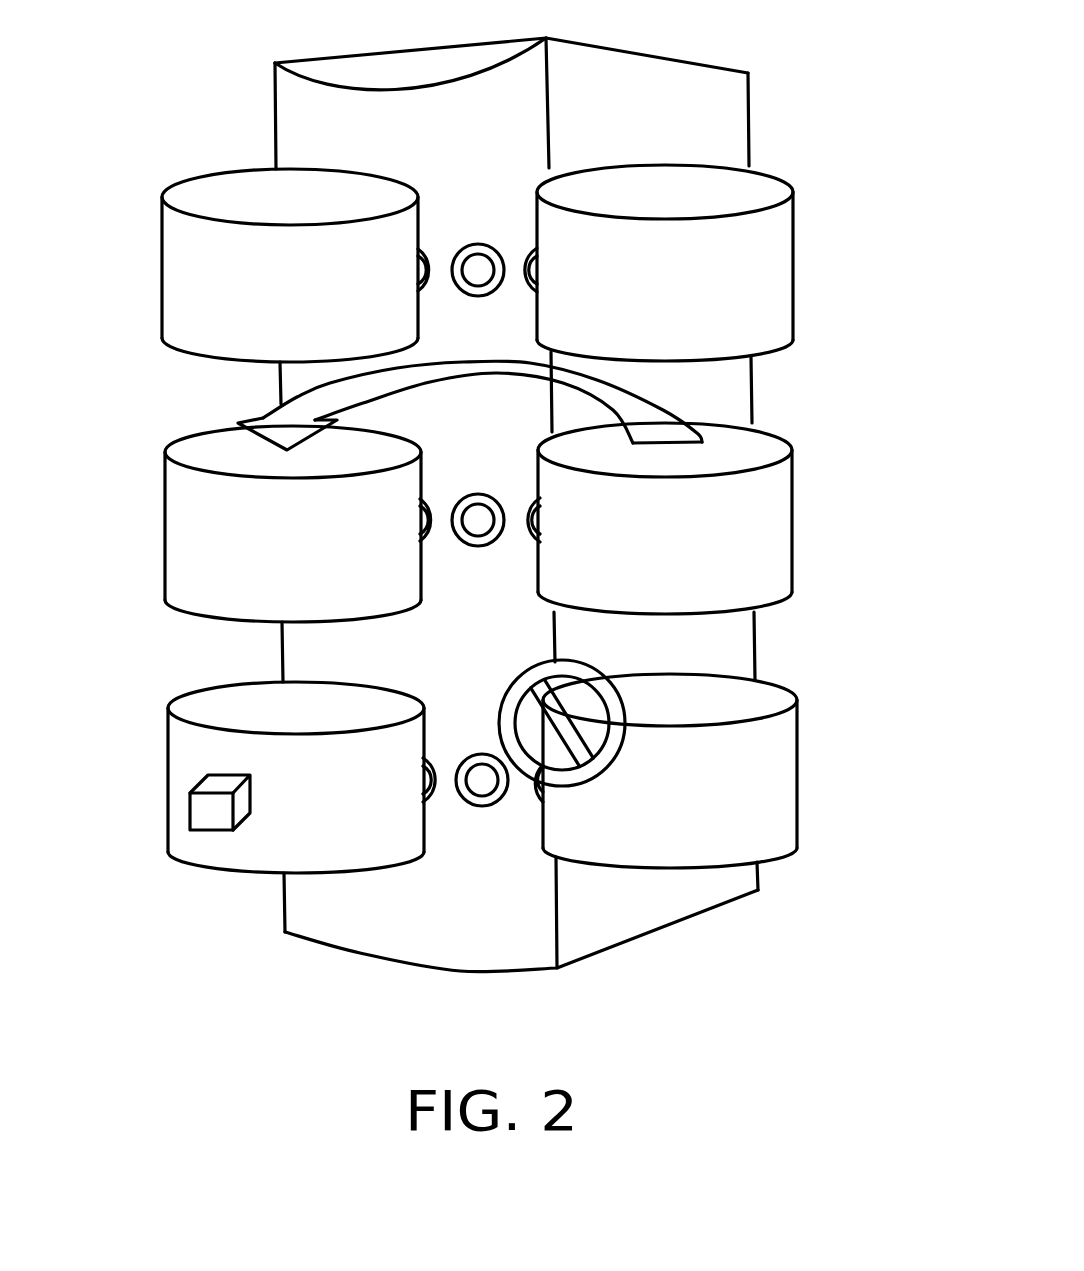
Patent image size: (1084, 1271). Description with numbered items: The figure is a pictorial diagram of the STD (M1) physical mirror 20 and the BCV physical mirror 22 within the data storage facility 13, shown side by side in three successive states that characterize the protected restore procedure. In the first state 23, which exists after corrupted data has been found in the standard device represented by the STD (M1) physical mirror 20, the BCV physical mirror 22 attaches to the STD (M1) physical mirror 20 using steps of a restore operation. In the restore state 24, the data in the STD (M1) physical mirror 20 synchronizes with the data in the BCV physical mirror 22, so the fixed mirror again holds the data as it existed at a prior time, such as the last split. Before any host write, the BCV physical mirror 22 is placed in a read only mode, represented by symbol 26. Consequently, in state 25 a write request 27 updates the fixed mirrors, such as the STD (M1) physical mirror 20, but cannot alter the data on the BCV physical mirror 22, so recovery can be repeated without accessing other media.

The data storage facility 13 is at (749, 113).
The STD (M1) physical mirror 20 is at (234, 608).
The BCV physical mirror 22 is at (709, 577).
The first state 23 is at (815, 218).
The restore operation state 24 is at (822, 502).
The protected restore state 25 is at (822, 755).
The read only mode symbol 26 is at (573, 660).
The write request 27 is at (212, 807).